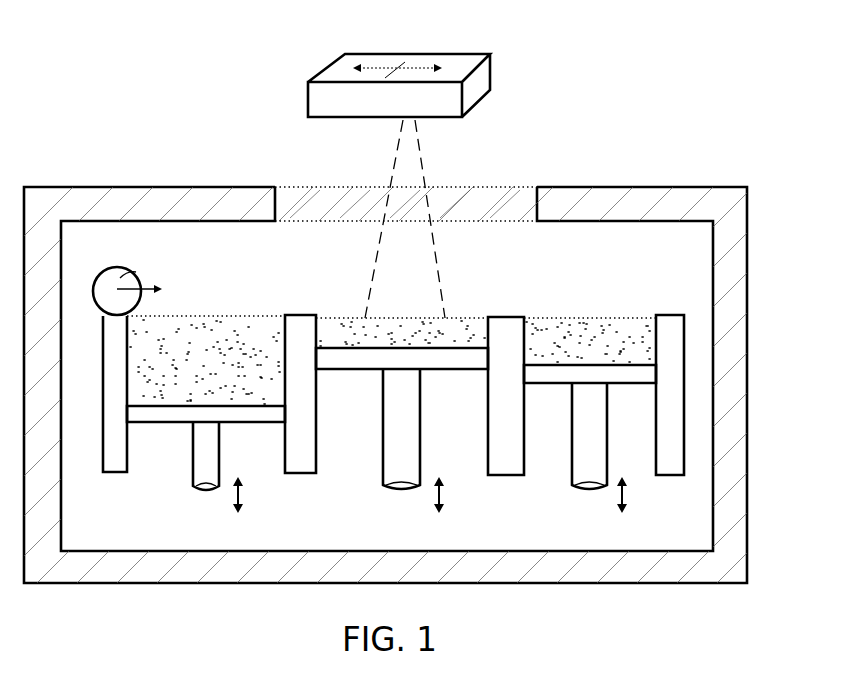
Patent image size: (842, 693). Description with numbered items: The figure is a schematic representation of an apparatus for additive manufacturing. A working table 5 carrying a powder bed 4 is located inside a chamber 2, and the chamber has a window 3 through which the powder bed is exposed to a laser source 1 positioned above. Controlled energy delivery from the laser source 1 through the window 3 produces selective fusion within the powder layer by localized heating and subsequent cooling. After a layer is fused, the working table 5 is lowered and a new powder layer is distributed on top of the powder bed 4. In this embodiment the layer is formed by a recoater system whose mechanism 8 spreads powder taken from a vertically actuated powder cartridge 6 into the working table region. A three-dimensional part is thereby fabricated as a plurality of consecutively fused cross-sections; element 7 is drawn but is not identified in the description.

The laser source 1 is at (482, 78).
The chamber 2 is at (733, 213).
The window 3 is at (520, 195).
The powder bed 4 is at (465, 327).
The working table 5 is at (377, 363).
The powder cartridge 6 is at (212, 333).
The powder supply platform 7 is at (183, 415).
The mechanism 8 is at (120, 277).